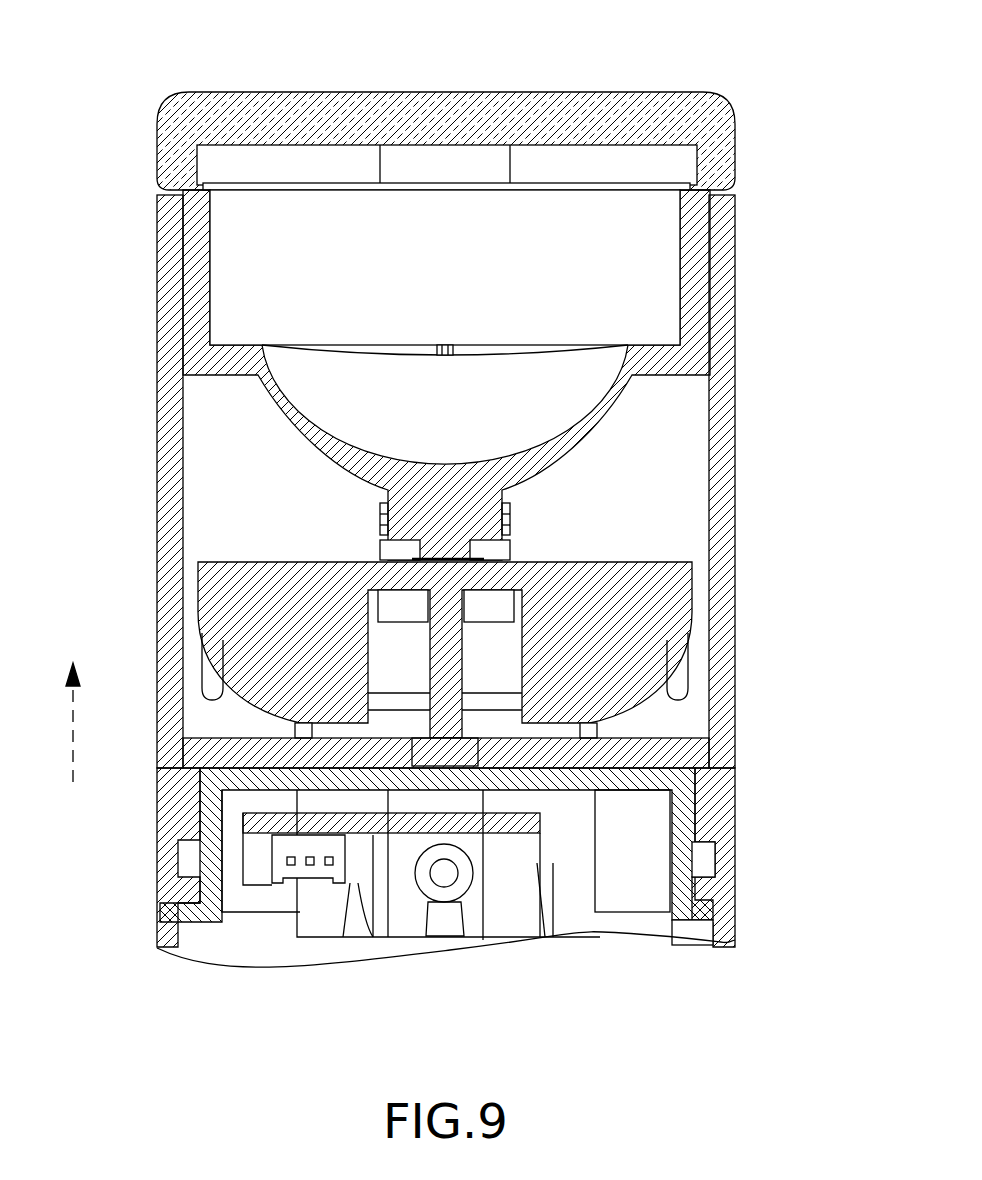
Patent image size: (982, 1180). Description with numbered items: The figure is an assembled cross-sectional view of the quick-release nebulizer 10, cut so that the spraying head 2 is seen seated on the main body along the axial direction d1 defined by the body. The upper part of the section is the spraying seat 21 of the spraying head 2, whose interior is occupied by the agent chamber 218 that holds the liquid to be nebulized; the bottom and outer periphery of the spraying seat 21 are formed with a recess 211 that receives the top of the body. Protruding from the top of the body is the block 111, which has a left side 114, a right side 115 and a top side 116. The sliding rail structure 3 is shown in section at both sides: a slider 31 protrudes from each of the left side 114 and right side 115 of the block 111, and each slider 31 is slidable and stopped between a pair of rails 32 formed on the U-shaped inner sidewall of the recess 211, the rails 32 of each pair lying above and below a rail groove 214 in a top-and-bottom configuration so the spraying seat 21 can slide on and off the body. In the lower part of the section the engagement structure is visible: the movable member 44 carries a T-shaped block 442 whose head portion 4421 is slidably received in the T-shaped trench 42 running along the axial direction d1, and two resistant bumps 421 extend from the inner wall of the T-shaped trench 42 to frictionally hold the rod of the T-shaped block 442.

The quick-release nebulizer 10 is at (463, 45).
The spraying head 2 is at (746, 414).
The spraying seat 21 is at (730, 369).
The agent chamber 218 is at (381, 388).
The block 111 is at (665, 740).
The right side 115 is at (203, 817).
The left side 114 is at (690, 803).
The top side 116 is at (660, 756).
The sliding rail structure 3 is at (825, 803).
The rails 32 is at (706, 833).
The slider 31 is at (706, 855).
The rail groove 214 is at (703, 877).
The movable member 44 is at (363, 925).
The T-shaped trench 42 is at (445, 920).
The head portion 4421 is at (465, 888).
The T-shaped block 442 is at (480, 876).
The resistant bumps 421 is at (430, 918).
The recess 211 is at (676, 897).
The axial direction d1 is at (74, 708).